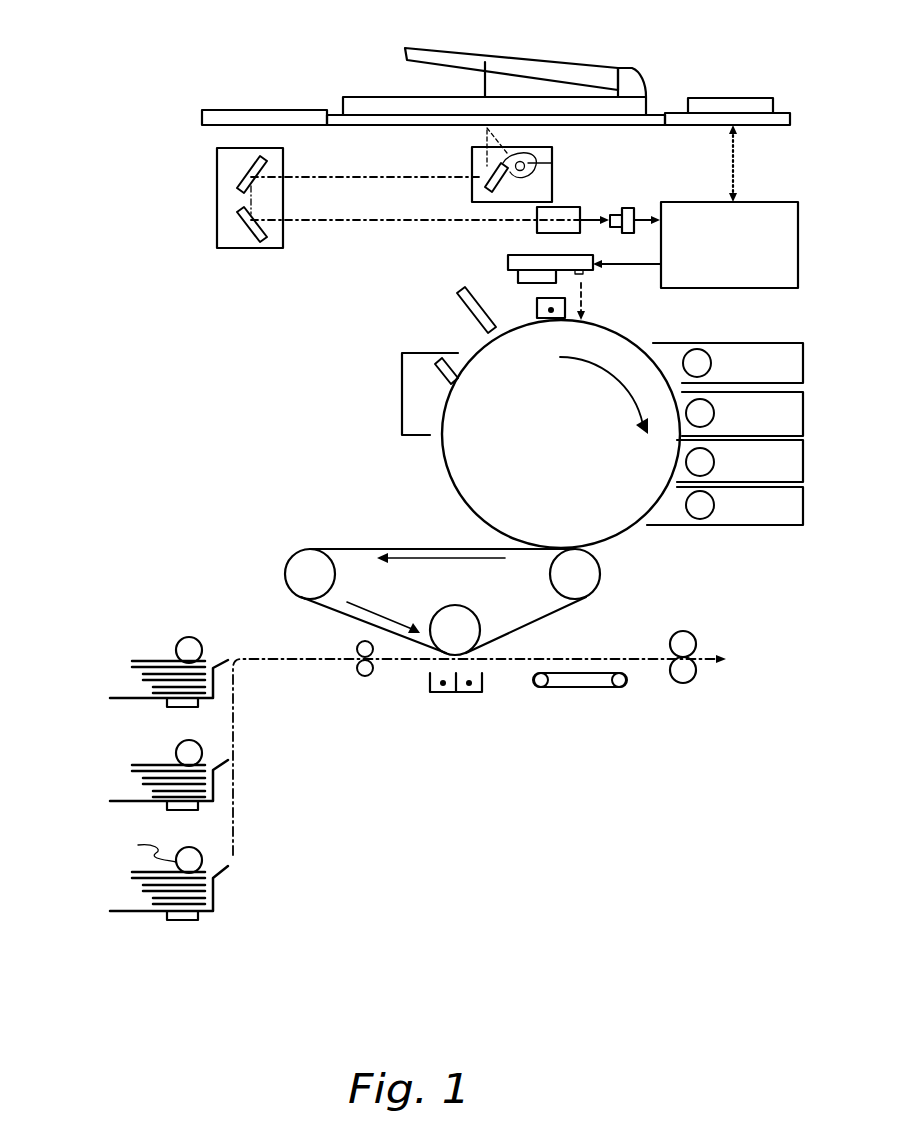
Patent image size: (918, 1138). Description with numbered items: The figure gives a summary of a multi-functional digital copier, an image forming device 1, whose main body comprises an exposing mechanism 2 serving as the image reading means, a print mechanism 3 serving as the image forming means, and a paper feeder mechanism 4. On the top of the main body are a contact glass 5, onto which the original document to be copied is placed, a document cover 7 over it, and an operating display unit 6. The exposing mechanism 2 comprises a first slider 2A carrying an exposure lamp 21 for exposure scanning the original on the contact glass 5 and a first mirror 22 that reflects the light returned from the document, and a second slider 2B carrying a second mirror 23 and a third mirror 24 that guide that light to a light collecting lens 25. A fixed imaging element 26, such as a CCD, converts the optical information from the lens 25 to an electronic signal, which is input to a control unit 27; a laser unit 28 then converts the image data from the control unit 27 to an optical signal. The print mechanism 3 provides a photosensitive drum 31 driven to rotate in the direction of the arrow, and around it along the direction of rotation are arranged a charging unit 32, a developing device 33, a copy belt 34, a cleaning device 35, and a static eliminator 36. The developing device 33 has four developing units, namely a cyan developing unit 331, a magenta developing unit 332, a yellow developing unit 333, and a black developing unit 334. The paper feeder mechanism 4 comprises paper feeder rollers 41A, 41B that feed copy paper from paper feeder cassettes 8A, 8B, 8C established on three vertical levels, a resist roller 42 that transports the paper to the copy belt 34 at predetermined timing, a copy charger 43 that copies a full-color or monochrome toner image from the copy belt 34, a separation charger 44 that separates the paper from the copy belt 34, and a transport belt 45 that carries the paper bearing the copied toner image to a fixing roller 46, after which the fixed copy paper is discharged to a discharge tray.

The image forming apparatus 1 is at (275, 453).
The exposing mechanism 2 is at (366, 229).
The first slider 2A is at (528, 166).
The second slider 2B is at (195, 198).
The print mechanism 3 is at (555, 427).
The paper feeder mechanism 4 is at (500, 803).
The contact glass 5 is at (660, 112).
The operating display unit 6 is at (770, 98).
The document cover 7 is at (640, 75).
The paper feeder cassette 8A is at (121, 658).
The paper feeder cassette 8B is at (124, 768).
The paper feeder cassette 8C is at (125, 883).
The exposure lamp 21 is at (556, 158).
The first mirror 22 is at (486, 184).
The second mirror 23 is at (217, 167).
The third mirror 24 is at (217, 229).
The lens 25 is at (535, 229).
The fixed imaging element 26 is at (630, 208).
The control unit 27 is at (785, 202).
The laser unit 28 is at (507, 262).
The photosensitive drum 31 is at (445, 462).
The charging unit 32 is at (537, 300).
The developing device 33 is at (759, 402).
The cyan developing unit 331 is at (803, 362).
The magenta developing unit 332 is at (803, 412).
The yellow developing unit 333 is at (803, 462).
The black developing unit 334 is at (803, 505).
The copy belt 34 is at (598, 598).
The cleaning device 35 is at (402, 397).
The static eliminator 36 is at (457, 307).
The paper feeder roller 41A is at (178, 641).
The paper feeder roller 41B is at (178, 754).
The resist roller 42 is at (357, 649).
The copy charger 43 is at (433, 696).
The separation charger 44 is at (470, 696).
The transport belt 45 is at (571, 689).
The fixing roller 46 is at (687, 684).